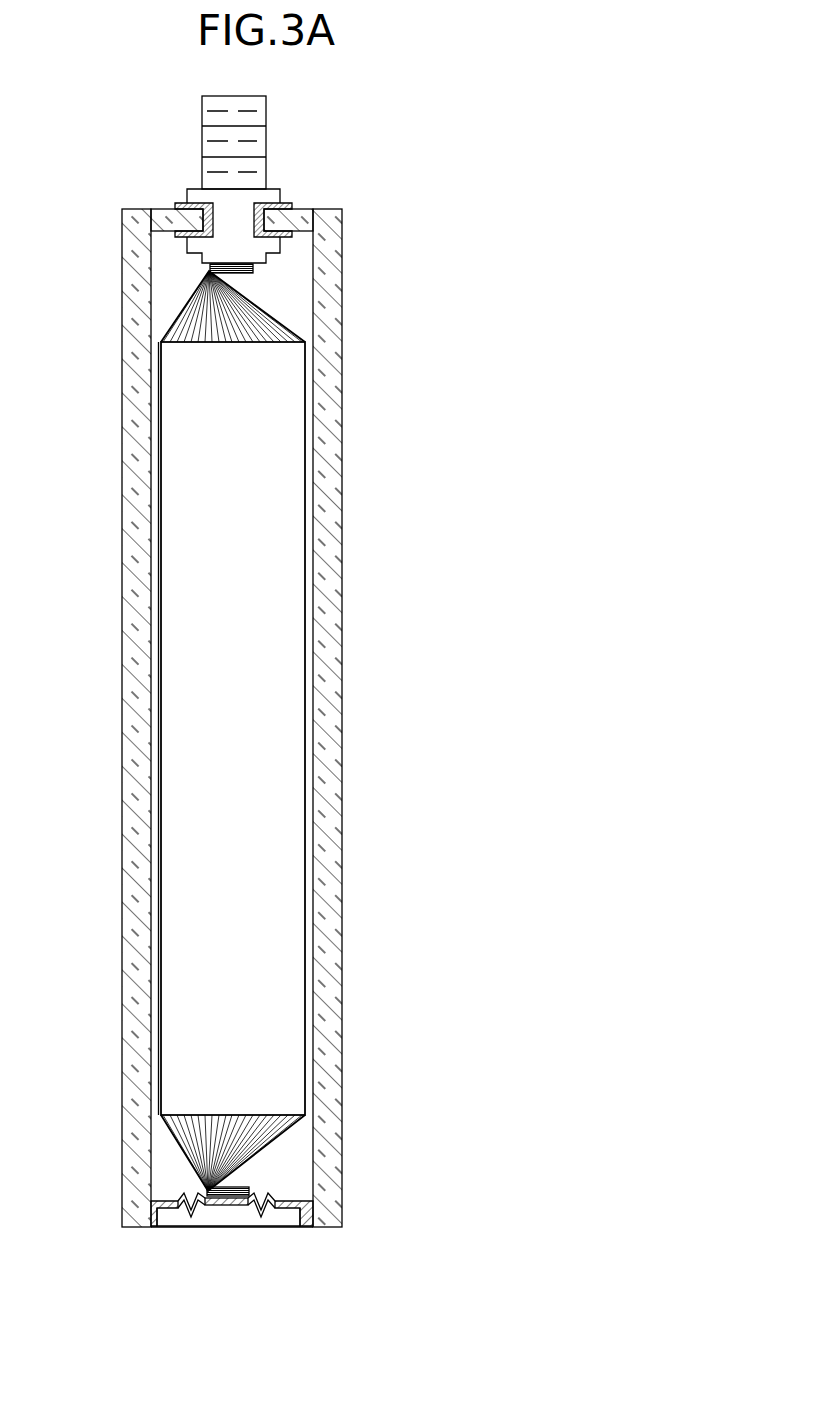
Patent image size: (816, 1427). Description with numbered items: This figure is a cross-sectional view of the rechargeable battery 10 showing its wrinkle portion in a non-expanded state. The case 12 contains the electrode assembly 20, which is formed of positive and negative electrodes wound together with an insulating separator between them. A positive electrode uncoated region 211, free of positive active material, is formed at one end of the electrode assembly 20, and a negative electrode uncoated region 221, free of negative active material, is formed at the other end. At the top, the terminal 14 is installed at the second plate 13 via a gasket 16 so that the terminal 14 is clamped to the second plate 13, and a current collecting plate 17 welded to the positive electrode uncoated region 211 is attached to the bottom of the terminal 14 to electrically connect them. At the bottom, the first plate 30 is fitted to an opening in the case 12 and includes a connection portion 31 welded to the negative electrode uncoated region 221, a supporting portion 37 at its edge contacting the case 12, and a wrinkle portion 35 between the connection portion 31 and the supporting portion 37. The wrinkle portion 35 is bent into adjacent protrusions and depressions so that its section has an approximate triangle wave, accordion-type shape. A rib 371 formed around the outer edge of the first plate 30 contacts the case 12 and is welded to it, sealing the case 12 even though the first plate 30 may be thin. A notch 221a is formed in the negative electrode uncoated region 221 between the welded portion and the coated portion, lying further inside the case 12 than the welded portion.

The rechargeable battery 10 is at (423, 145).
The case 12 is at (330, 545).
The second plate 13 is at (303, 217).
The terminal 14 is at (266, 112).
The gasket 16 is at (175, 203).
The current collecting plate 17 is at (207, 263).
The electrode assembly 20 is at (270, 484).
The positive electrode uncoated region 211 is at (252, 318).
The negative electrode uncoated region 221 is at (282, 1133).
The notch 221a is at (222, 1190).
The first plate 30 is at (302, 1229).
The connection portion 31 is at (228, 1205).
The wrinkle portion 35 is at (273, 1212).
The supporting portion 37 is at (172, 1216).
The rib 371 is at (153, 1228).